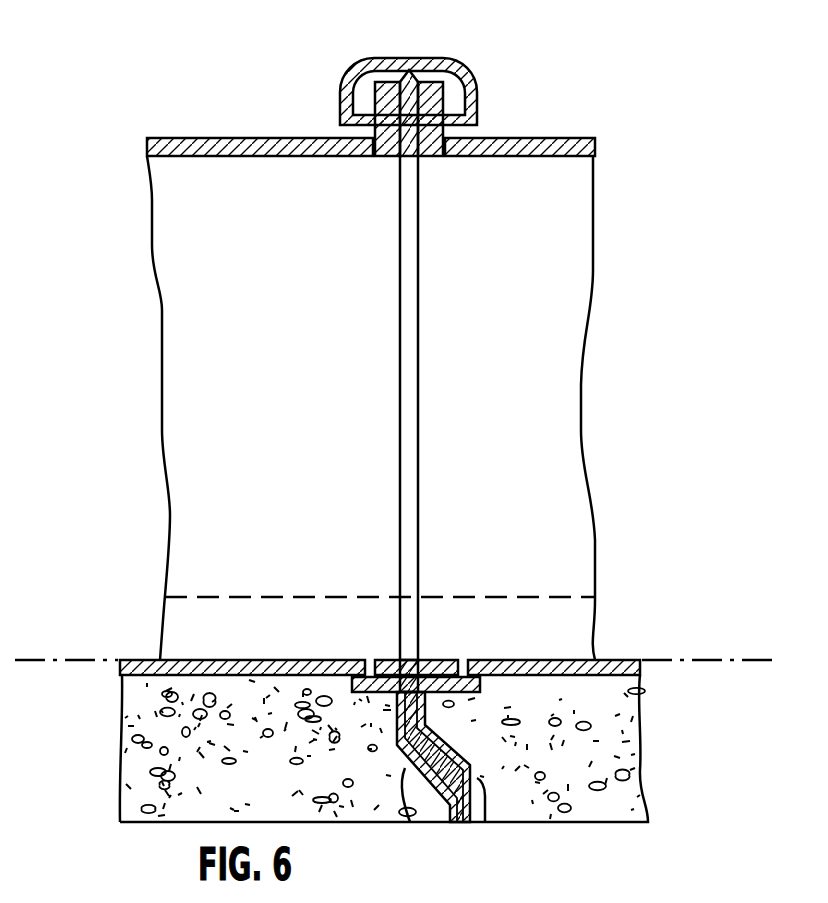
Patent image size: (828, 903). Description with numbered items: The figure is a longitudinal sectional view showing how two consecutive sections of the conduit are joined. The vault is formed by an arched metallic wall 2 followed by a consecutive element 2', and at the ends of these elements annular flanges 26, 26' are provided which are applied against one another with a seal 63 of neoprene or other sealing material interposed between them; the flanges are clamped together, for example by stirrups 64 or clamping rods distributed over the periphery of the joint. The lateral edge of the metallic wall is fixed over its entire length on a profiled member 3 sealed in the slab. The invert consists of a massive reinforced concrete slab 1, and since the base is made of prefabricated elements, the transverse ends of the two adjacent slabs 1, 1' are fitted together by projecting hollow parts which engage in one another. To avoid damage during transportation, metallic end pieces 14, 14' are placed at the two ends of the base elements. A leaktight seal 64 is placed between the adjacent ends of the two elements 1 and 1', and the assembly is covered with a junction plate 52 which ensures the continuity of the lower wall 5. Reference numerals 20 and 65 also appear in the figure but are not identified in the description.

The reinforced concrete slab 1 is at (412, 748).
The adjacent slab 1' is at (120, 748).
The arched metallic wall 2 is at (520, 367).
The consecutive element 2' is at (260, 366).
The profiled member 3 is at (565, 597).
The lower wall 5 is at (236, 667).
The metallic end piece 14 is at (471, 782).
The metallic end piece 14' is at (418, 770).
The reference plane 20 is at (668, 660).
The annular flange 26 is at (486, 99).
The annular flange 26' is at (345, 106).
The junction plate 52 is at (447, 660).
The seal 63 is at (410, 72).
The stirrup 64 is at (432, 60).
The anchor foot 65 is at (435, 895).